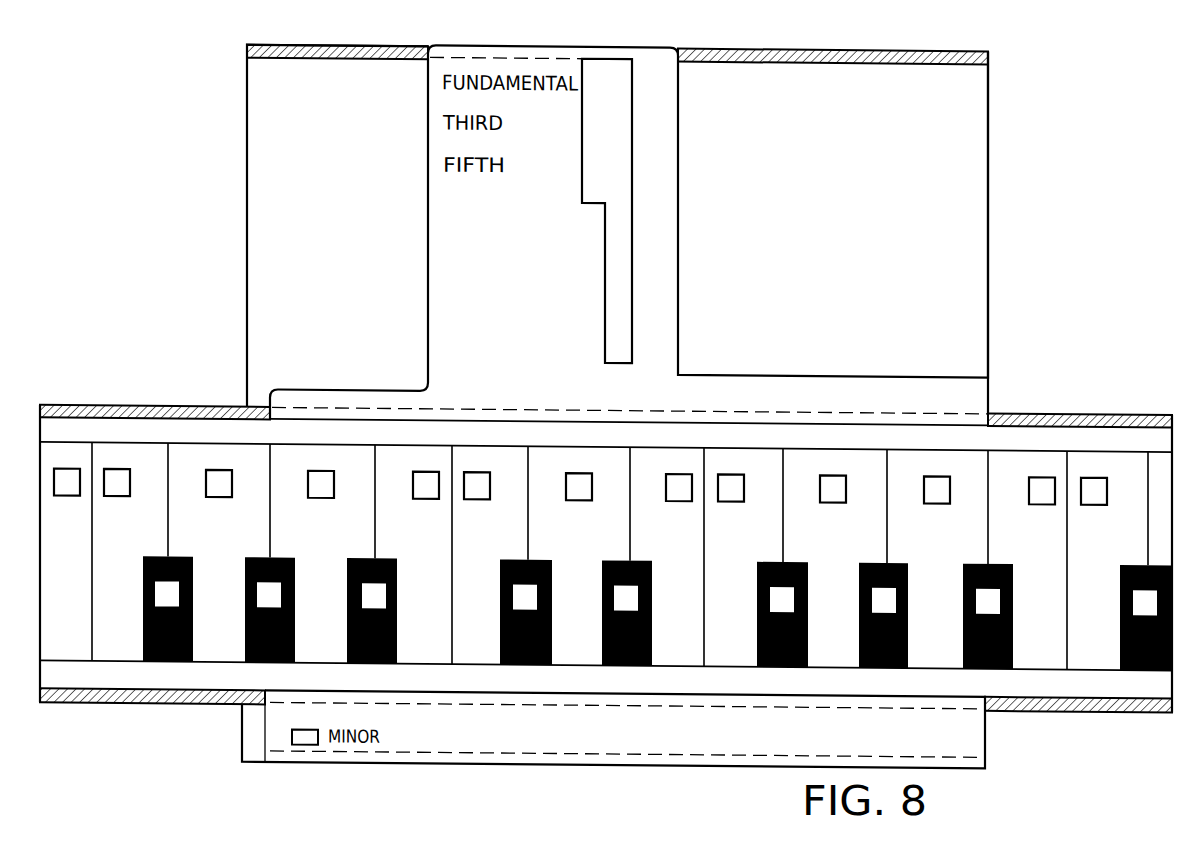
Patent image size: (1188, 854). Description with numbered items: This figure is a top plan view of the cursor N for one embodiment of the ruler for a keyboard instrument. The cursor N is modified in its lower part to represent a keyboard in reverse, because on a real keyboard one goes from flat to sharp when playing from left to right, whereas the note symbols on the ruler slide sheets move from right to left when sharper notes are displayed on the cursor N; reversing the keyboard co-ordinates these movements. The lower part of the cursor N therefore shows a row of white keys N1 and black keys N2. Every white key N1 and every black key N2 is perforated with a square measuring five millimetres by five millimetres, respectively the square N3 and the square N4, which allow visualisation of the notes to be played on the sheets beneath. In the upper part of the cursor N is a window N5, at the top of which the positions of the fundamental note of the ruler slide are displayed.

The cursor N is at (302, 199).
The white key N1 is at (1011, 463).
The black key N2 is at (1128, 556).
The square N3 is at (121, 477).
The square N4 is at (268, 591).
The window N5 is at (607, 164).